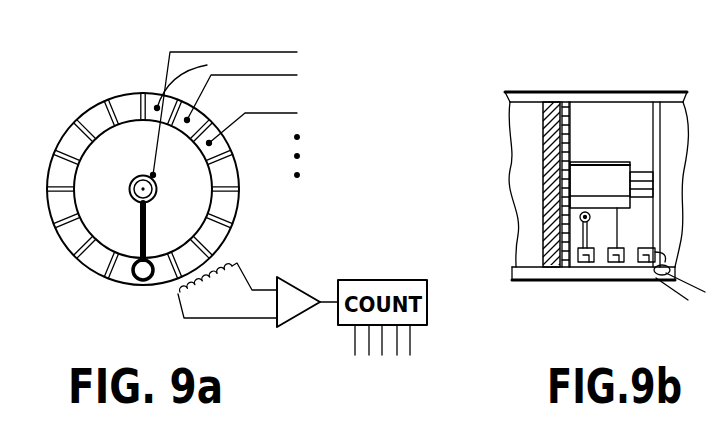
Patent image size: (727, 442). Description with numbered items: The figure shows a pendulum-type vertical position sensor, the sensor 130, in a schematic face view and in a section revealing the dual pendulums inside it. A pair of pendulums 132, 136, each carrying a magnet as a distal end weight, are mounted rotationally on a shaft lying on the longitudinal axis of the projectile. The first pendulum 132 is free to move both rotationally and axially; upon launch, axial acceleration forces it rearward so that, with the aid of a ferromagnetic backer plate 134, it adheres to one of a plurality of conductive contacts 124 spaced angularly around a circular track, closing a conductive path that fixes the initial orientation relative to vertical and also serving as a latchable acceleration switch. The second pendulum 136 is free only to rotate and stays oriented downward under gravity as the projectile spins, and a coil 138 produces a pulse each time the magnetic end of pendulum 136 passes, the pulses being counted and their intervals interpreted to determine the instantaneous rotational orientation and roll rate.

In FIG. 9A, the conductive contacts 124 is at (76, 141).
In FIG. 9A, the sensor assembly 130 is at (158, 172).
In FIG. 9B, the sensor assembly 130 is at (595, 210).
In FIG. 9B, the first pendulum 132 is at (585, 264).
In FIG. 9B, the ferromagnetic backer plate 134 is at (542, 167).
In FIG. 9B, the second pendulum 136 is at (617, 264).
In FIG. 9A, the coil 138 is at (181, 302).
In FIG. 9B, the coil 138 is at (644, 264).